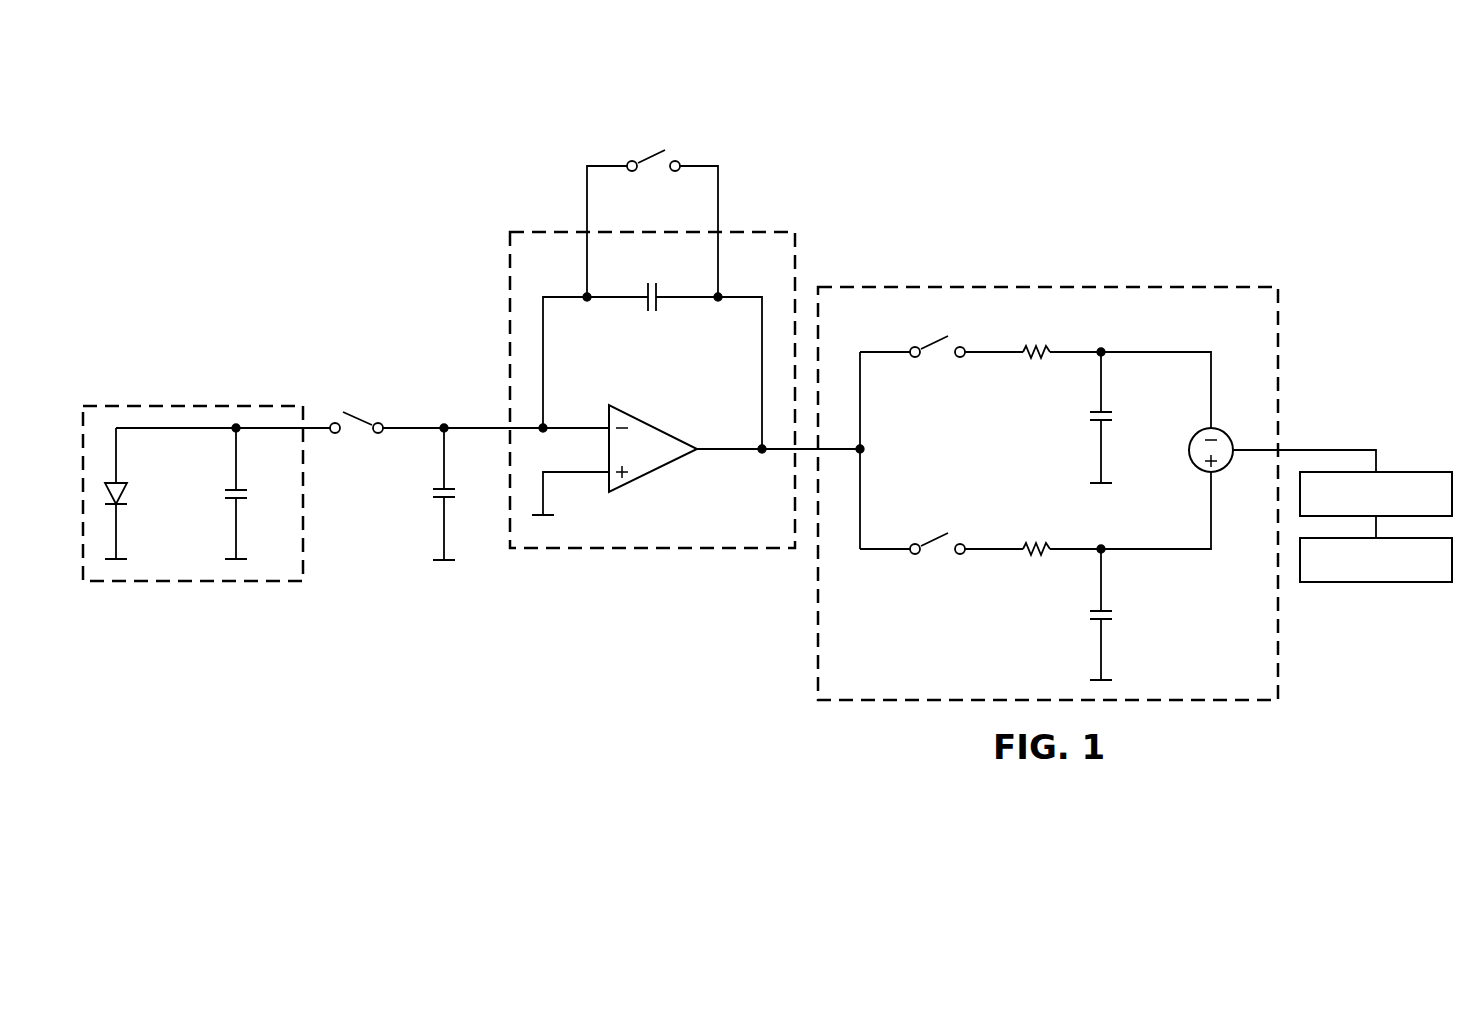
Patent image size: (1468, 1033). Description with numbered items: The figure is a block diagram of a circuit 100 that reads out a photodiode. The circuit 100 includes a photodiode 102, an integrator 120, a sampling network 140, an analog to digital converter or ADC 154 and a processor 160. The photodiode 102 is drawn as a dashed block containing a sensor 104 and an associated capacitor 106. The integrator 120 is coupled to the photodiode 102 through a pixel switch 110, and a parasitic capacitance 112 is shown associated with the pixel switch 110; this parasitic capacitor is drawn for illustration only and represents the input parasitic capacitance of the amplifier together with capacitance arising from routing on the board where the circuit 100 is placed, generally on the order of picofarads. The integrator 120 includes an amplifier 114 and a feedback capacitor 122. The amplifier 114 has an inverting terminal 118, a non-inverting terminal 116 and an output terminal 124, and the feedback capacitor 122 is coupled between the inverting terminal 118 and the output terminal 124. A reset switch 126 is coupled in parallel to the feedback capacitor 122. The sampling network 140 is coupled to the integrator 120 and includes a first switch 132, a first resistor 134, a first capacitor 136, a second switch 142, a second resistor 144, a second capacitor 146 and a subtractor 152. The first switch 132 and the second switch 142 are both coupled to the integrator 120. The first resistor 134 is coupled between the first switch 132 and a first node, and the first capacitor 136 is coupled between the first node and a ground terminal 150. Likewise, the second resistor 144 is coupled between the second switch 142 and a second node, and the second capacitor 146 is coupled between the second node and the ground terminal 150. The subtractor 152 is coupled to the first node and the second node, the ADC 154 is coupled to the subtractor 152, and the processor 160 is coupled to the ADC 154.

The circuit 100 is at (428, 116).
The photodiode 102 is at (137, 593).
The sensor 104 is at (121, 492).
The capacitor Ca 106 is at (228, 492).
The pixel switch PS 110 is at (357, 417).
The parasitic capacitance Cp 112 is at (434, 492).
The amplifier 114 is at (655, 471).
The non-inverting terminal 116 is at (600, 476).
The inverting terminal 118 is at (600, 425).
The integrator 120 is at (500, 334).
The feedback capacitor Cfb 122 is at (652, 313).
The output terminal 124 is at (706, 447).
The reset switch RS 126 is at (650, 172).
The first switch S1 132 is at (938, 346).
The first resistor R1 134 is at (1040, 358).
The first capacitor C1 136 is at (1090, 416).
The sampling network 140 is at (1089, 280).
The second switch S2 142 is at (938, 543).
The second resistor R2 144 is at (1040, 555).
The second capacitor C2 146 is at (1090, 614).
The ground terminal 150 is at (1112, 477).
The subtractor 152 is at (1226, 433).
The analog to digital converter (ADC) 154 is at (1407, 471).
The processor 160 is at (1385, 584).